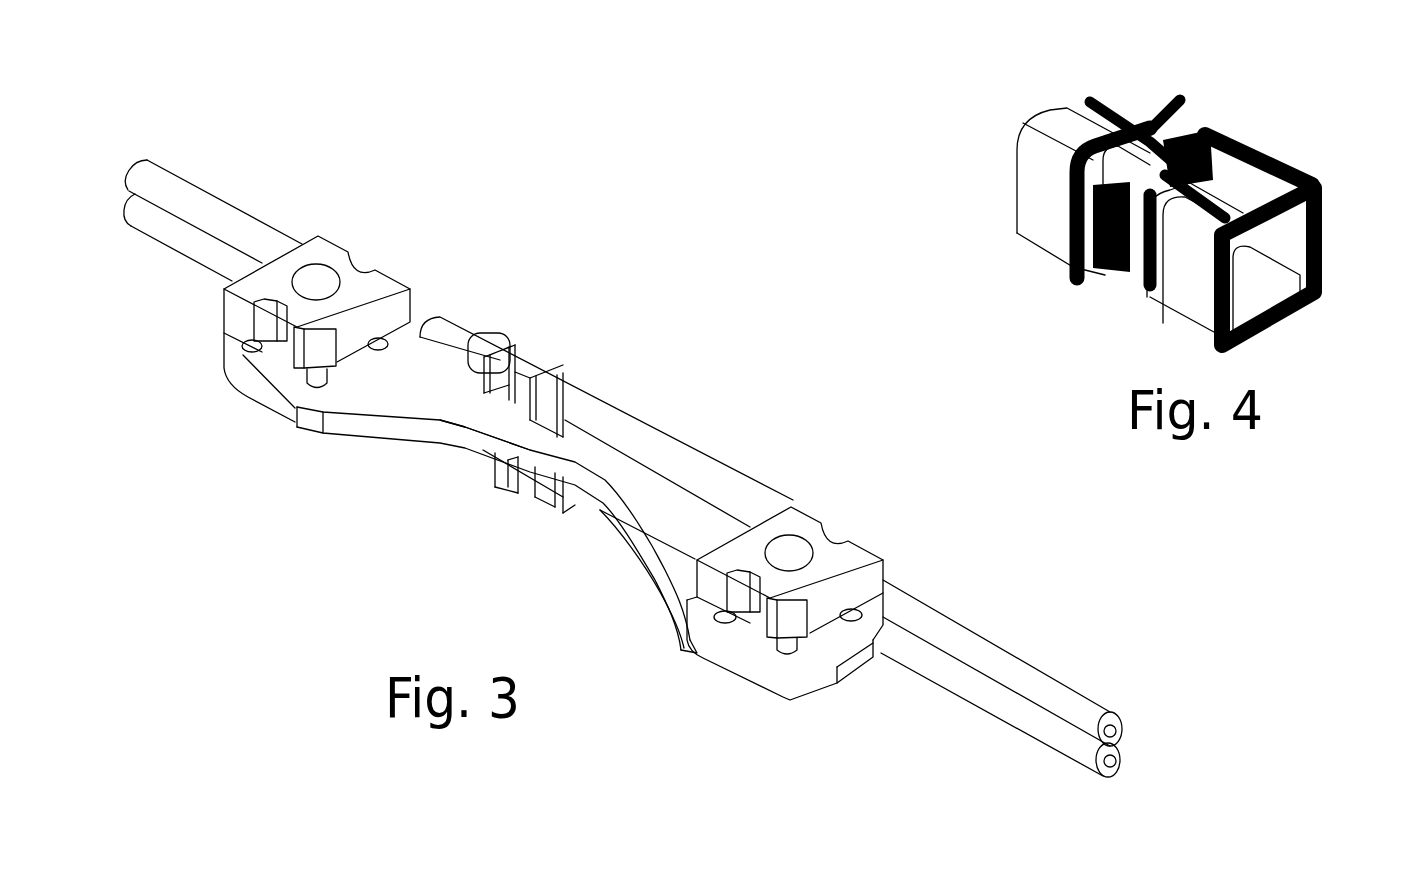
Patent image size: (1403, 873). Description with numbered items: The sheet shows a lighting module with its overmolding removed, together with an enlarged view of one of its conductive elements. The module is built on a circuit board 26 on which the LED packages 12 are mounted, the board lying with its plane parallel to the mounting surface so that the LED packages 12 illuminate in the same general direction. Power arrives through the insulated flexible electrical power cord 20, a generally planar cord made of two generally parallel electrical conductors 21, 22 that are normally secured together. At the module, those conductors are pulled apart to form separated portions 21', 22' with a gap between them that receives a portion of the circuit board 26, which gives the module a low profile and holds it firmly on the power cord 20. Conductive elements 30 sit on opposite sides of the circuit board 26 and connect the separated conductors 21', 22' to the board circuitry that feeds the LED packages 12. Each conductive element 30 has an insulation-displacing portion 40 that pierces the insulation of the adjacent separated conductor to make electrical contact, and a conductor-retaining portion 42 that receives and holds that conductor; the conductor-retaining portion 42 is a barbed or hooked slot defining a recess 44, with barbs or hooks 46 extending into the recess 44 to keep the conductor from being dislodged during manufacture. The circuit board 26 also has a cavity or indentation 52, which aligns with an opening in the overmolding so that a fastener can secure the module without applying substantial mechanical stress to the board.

In FIG. 3, the LED packages 12 is at (315, 278).
In FIG. 3, the insulated flexible electrical power cord 20 is at (982, 642).
In FIG. 3, the electrical conductor 21 is at (1155, 732).
In FIG. 3, the electrical conductor 22 is at (1141, 772).
In FIG. 3, the separated portion of electrical conductor 21' is at (606, 422).
In FIG. 3, the separated portion of electrical conductor 22' is at (623, 579).
In FIG. 3, the circuit board 26 is at (400, 423).
In FIG. 3, the conductive element 30 is at (567, 353).
In FIG. 4, the conductive element 30 is at (1287, 97).
In FIG. 3, the cavity or indentation 52 is at (460, 460).
In FIG. 4, the insulation-displacing portion 40 is at (1213, 147).
In FIG. 4, the conductor-retaining portion 42 is at (1040, 200).
In FIG. 4, the recess 44 is at (1068, 100).
In FIG. 4, the barbs or hooks 46 is at (1080, 123).